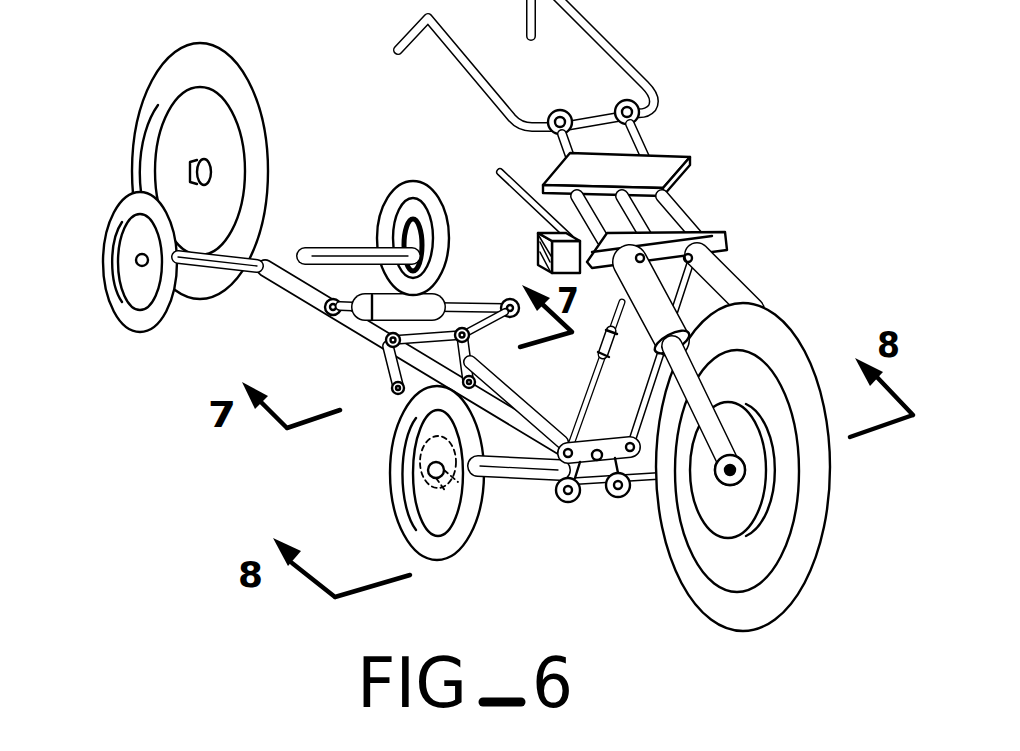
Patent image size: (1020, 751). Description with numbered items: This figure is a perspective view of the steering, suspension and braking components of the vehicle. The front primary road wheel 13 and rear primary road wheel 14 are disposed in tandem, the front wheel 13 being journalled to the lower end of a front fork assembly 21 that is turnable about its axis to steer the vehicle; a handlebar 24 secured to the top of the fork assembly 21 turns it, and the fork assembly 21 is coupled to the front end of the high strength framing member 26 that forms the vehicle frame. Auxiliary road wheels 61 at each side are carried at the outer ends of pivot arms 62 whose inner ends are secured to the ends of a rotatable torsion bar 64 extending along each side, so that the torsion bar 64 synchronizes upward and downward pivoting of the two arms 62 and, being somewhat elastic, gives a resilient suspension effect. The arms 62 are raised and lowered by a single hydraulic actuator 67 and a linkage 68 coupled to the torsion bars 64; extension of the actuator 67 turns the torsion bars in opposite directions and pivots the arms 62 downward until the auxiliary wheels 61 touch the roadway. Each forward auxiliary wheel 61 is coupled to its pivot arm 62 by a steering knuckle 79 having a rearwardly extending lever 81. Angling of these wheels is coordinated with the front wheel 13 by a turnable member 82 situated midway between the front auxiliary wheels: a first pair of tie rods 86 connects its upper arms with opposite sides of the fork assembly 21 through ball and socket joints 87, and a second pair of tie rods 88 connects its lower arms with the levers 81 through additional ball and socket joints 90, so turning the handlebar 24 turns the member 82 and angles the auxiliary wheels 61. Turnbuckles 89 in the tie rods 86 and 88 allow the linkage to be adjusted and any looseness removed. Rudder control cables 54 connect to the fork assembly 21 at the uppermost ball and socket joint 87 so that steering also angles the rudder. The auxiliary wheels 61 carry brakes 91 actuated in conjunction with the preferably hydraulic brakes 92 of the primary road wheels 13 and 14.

The front primary road wheel 13 is at (784, 594).
The rear primary road wheel 14 is at (162, 95).
The front fork assembly 21 is at (740, 190).
The handlebar 24 is at (622, 40).
The framing member 26 is at (533, 248).
The cables 54 is at (528, 200).
The auxiliary road wheels 61 is at (128, 320).
The pivot arms 62 is at (212, 290).
The torsion bar 64 is at (300, 303).
The hydraulic actuator 67 is at (440, 302).
The linkage 68 is at (340, 360).
The steering knuckle 79 is at (416, 533).
The lever 81 is at (402, 505).
The turnable member 82 is at (582, 522).
The tie rods 86 is at (614, 318).
The ball and socket joints 87 is at (702, 262).
The tie rods 88 is at (557, 500).
The turnbuckles 89 is at (606, 342).
The ball and socket joints 90 is at (406, 450).
The brakes 91 is at (422, 228).
The brakes 92 is at (780, 470).